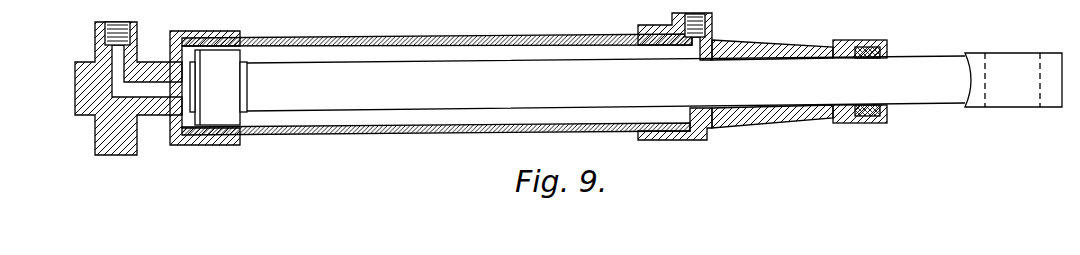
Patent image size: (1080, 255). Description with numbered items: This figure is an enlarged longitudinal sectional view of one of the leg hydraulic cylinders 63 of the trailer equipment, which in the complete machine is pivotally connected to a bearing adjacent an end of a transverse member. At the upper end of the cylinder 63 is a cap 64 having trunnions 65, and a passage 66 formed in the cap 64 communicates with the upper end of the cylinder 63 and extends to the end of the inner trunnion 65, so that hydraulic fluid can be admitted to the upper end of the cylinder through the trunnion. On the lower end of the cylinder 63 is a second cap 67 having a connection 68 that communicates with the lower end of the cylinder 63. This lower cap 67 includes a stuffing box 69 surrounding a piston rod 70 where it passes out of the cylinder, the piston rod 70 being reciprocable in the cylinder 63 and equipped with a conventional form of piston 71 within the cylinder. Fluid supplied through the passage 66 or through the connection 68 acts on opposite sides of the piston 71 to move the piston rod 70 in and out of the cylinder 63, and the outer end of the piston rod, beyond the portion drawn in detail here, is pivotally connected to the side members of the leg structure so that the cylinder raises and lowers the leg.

The leg hydraulic cylinder 63 is at (411, 136).
The cap 64 is at (200, 145).
The trunnions 65 is at (110, 138).
The passage 66 is at (113, 54).
The cap 67 is at (770, 45).
The connection 68 is at (708, 38).
The stuffing box 69 is at (855, 42).
The piston rod 70 is at (654, 82).
The piston 71 is at (218, 87).